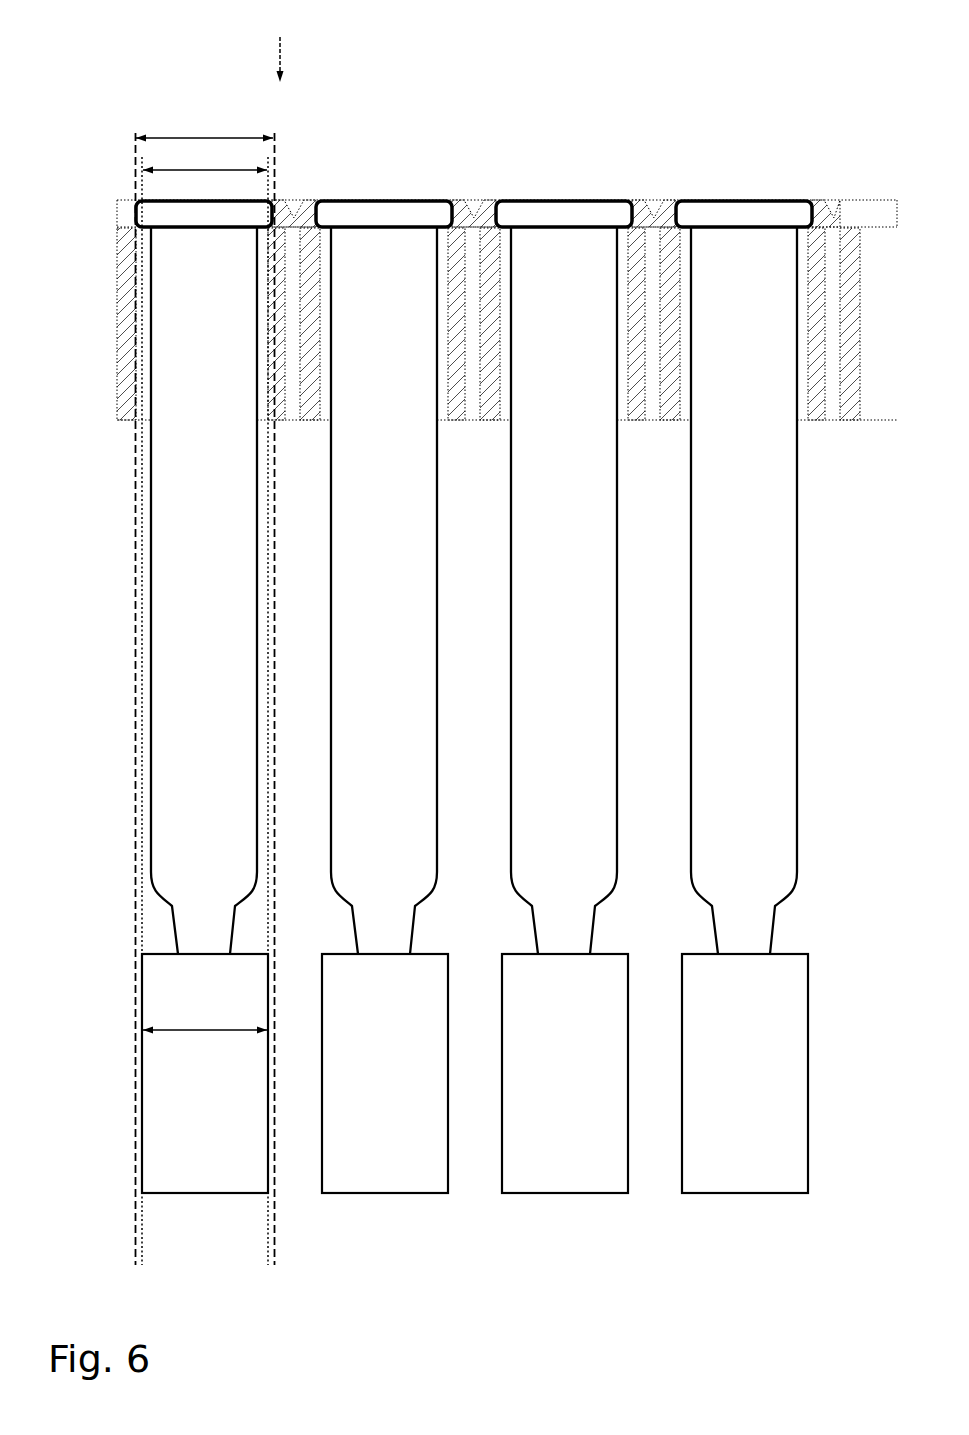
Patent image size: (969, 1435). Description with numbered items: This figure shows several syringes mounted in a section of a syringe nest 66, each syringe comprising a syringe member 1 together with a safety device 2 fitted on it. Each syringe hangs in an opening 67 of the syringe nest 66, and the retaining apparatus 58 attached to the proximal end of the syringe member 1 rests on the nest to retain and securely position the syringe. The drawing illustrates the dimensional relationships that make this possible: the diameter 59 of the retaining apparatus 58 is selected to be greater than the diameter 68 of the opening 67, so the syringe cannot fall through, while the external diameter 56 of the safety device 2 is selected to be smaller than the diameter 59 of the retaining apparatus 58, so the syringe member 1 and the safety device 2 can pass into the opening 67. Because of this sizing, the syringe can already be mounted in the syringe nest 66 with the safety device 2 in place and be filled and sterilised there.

The syringe member 1 is at (182, 840).
The safety device 2 is at (175, 1087).
The external diameter 56 is at (165, 1030).
The retaining apparatus 58 is at (157, 218).
The diameter of the retaining apparatus 59 is at (177, 137).
The syringe nest 66 is at (297, 213).
The opening 67 is at (278, 44).
The diameter of an opening 68 is at (233, 168).